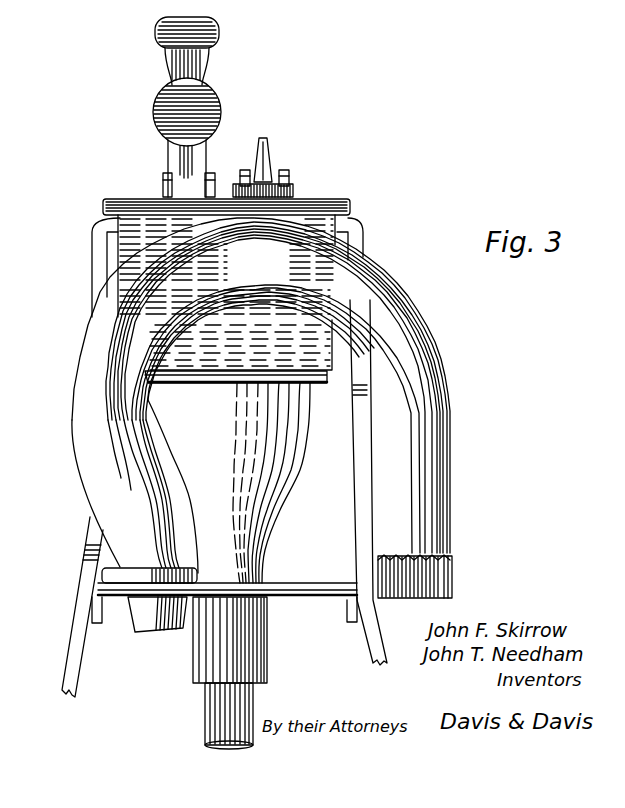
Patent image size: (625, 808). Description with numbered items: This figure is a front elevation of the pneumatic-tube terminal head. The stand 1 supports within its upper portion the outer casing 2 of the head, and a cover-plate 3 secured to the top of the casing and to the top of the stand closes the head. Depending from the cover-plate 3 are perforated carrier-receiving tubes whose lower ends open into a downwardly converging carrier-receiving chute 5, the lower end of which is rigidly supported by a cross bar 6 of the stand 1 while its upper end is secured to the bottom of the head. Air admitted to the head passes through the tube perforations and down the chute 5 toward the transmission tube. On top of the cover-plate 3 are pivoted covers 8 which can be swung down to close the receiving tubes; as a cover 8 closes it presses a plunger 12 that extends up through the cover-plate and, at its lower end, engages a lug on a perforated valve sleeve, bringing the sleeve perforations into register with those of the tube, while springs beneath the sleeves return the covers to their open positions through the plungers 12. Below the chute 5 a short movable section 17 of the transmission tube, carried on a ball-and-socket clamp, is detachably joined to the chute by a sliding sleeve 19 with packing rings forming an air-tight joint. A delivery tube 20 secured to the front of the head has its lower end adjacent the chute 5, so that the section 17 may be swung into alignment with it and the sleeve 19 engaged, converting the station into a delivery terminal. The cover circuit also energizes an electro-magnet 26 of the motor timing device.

The stand 1 is at (103, 257).
The outer casing 2 is at (238, 351).
The cover-plate 3 is at (133, 198).
The carrier-receiving chute 5 is at (253, 483).
The cross bar 6 is at (303, 582).
The pivoted cover 8 is at (225, 117).
The plunger 12 is at (189, 168).
The short section of the transmission tube 17 is at (207, 704).
The sliding sleeve 19 is at (267, 653).
The delivery tube 20 is at (77, 382).
The electro-magnet 26 is at (219, 34).